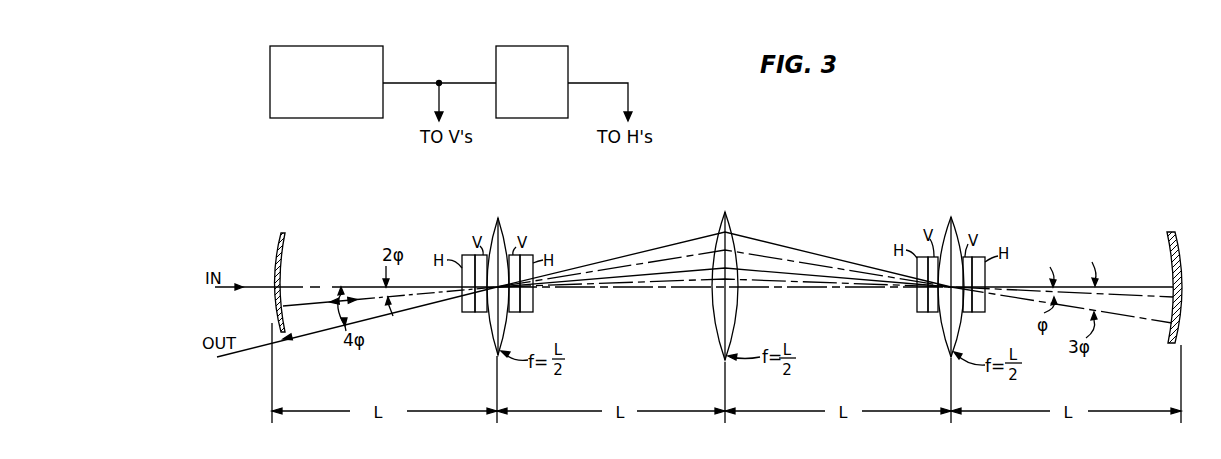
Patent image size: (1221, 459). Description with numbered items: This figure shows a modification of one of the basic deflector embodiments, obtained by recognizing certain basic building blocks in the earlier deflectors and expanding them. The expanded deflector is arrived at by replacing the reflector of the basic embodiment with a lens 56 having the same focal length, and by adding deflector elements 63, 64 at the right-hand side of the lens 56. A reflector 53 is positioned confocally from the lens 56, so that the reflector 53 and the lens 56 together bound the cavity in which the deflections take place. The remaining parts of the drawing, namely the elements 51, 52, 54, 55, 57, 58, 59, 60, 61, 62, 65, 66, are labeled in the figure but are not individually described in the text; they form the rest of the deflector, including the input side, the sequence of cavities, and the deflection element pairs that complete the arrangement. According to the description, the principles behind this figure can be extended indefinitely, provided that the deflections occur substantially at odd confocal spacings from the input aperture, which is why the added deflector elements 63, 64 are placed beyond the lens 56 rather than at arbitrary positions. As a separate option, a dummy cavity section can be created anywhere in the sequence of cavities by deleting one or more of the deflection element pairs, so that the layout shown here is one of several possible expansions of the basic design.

The mirror 51 is at (260, 274).
The concave reflecting surface of mirror 52 is at (274, 282).
The reflector 53 is at (1170, 232).
The first lens 54 is at (500, 222).
The second lens 55 is at (727, 222).
The lens 56 is at (952, 222).
The horizontal polarization modulator plate 57 is at (462, 306).
The vertical polarization modulator plate 58 is at (482, 312).
The vertical polarization modulator plate 59 is at (512, 312).
The horizontal polarization modulator plate 60 is at (534, 307).
The horizontal polarization modulator plate 61 is at (917, 307).
The vertical polarization modulator plate 62 is at (934, 312).
The deflector element 63 is at (968, 313).
The deflector element 64 is at (985, 307).
The synchronous modulator 65 is at (270, 63).
The 90 degree phase shifter 66 is at (568, 60).